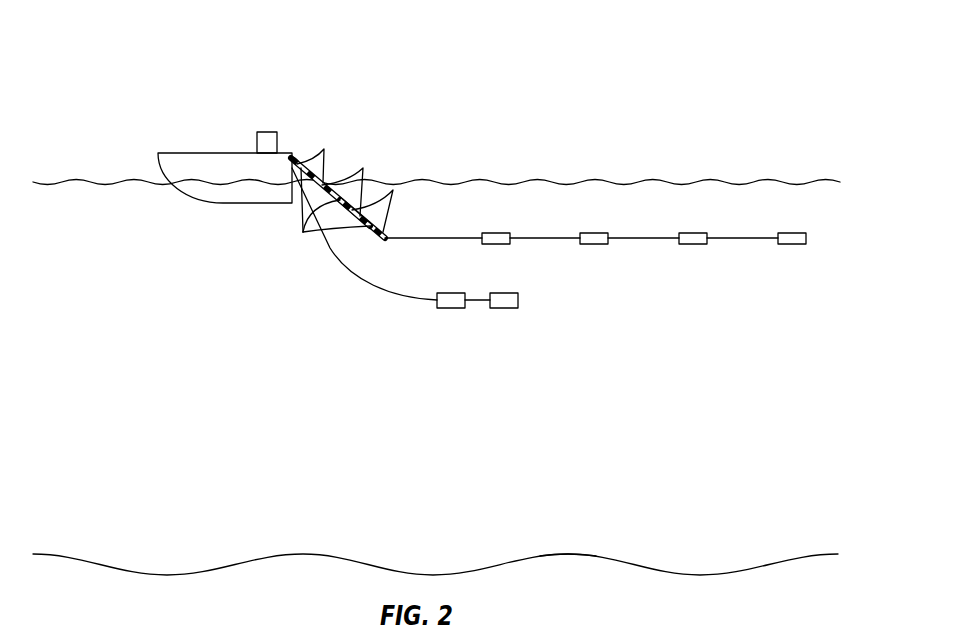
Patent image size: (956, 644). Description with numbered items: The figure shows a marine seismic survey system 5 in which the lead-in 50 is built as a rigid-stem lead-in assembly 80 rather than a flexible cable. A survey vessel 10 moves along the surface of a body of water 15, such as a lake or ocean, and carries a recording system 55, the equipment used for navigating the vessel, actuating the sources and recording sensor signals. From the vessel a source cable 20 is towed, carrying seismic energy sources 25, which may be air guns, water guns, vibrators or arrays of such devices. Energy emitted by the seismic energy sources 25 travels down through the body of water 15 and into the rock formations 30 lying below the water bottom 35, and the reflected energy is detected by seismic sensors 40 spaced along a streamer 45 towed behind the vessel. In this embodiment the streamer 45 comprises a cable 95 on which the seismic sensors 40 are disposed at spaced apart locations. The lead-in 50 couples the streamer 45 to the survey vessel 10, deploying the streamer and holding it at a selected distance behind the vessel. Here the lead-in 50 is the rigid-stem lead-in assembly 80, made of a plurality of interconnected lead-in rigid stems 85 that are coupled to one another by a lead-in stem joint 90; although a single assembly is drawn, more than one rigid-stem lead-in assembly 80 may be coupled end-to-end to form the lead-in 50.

The marine seismic survey system 5 is at (210, 86).
The survey vessel 10 is at (177, 153).
The body of water 15 is at (248, 354).
The source cable 20 is at (335, 262).
The seismic energy sources 25 is at (452, 308).
The rock formations 30 is at (579, 592).
The water bottom 35 is at (569, 554).
The seismic sensors 40 is at (496, 233).
The streamer 45 is at (662, 328).
The lead-in 50 is at (330, 174).
The recording system 55 is at (267, 132).
The rigid-stem lead-in assembly 80 is at (364, 210).
The lead-in rigid stems 85 is at (294, 157).
The lead-in stem joint 90 is at (327, 146).
The cable 95 is at (457, 238).